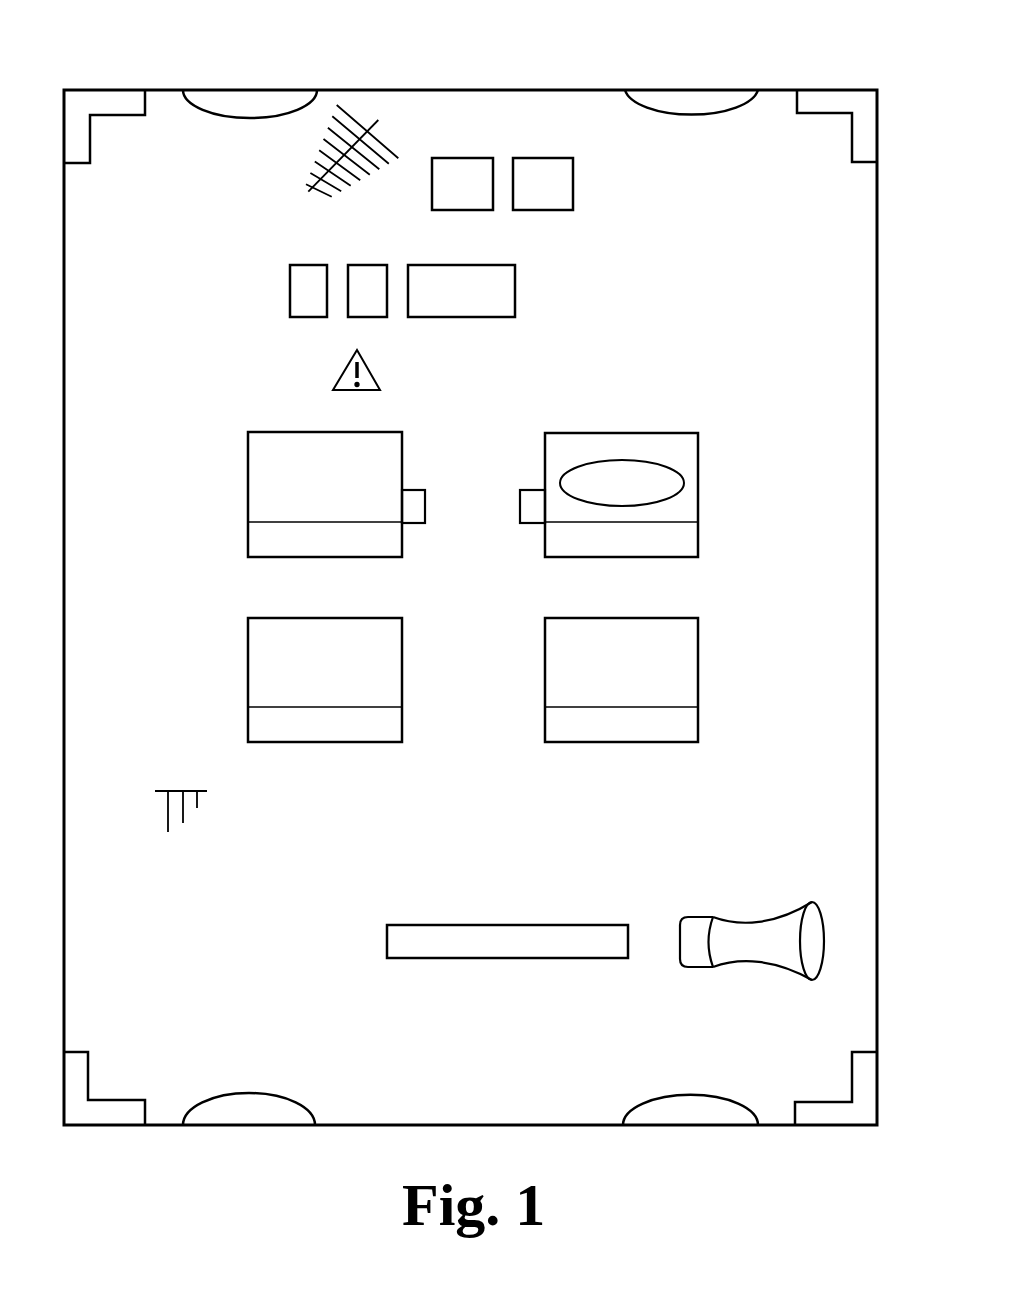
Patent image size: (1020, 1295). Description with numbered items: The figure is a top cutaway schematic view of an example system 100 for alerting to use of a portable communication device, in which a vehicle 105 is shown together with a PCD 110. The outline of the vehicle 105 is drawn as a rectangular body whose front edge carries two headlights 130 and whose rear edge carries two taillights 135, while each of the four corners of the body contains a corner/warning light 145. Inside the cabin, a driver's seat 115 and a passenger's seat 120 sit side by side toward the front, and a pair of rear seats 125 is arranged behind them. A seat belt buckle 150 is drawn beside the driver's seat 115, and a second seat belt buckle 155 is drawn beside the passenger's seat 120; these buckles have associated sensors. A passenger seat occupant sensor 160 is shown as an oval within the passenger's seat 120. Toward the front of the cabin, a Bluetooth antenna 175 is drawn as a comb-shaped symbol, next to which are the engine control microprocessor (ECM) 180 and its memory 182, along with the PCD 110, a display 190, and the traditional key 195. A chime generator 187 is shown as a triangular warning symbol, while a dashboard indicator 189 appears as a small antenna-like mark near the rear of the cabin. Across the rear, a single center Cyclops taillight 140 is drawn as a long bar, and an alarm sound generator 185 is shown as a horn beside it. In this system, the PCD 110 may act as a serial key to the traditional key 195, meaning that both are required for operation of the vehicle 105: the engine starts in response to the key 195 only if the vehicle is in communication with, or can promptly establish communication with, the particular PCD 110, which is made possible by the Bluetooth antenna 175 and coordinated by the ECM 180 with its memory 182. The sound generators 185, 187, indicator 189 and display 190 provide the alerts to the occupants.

The system 100 is at (150, 46).
The vehicle 105 is at (165, 305).
The PCD 110 is at (360, 265).
The driver's seat 115 is at (247, 490).
The passenger's seat 120 is at (698, 495).
The rear seats 125 is at (247, 670).
The headlights 130 is at (250, 120).
The taillights 135 is at (248, 1093).
The Cyclops taillight 140 is at (427, 925).
The corner/warning lights 145 is at (92, 145).
The seat belt buckle 150 is at (413, 490).
The seat belt buckle 155 is at (520, 510).
The passenger seat occupant sensor 160 is at (625, 460).
The Bluetooth antenna 175 is at (285, 195).
The engine control microprocessor (ECM) 180 is at (462, 158).
The memory 182 is at (545, 158).
The alarm sound generator 185 is at (755, 922).
The chime generator 187 is at (402, 366).
The dashboard indicator 189 is at (238, 812).
The display 190 is at (515, 288).
The traditional key 195 is at (288, 293).